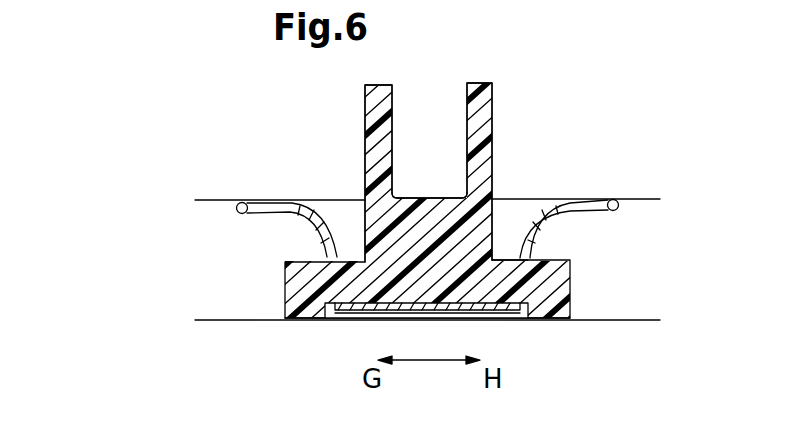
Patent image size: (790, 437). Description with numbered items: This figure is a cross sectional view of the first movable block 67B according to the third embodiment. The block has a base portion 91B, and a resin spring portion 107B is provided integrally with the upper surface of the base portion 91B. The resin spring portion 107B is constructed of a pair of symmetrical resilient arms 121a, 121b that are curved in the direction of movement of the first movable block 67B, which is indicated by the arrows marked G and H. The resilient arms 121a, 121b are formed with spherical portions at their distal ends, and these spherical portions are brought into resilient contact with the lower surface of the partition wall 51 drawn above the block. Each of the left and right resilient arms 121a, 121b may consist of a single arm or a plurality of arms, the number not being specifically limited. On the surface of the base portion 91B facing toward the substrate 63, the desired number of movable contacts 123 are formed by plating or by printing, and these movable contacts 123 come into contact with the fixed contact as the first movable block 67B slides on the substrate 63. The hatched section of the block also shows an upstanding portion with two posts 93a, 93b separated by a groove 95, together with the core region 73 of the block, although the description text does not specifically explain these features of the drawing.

The first movable block 67B is at (600, 137).
The yoke core 73 is at (365, 151).
The base portion 91B is at (571, 268).
The left post 93a is at (366, 85).
The right post 93b is at (492, 84).
The groove 95 is at (393, 124).
The partition wall 51 is at (196, 200).
The substrate 63 is at (226, 320).
The resilient arm 121a is at (306, 225).
The resilient arm 121b is at (560, 220).
The resin spring portion 107B is at (523, 215).
The movable contact 123 is at (297, 322).